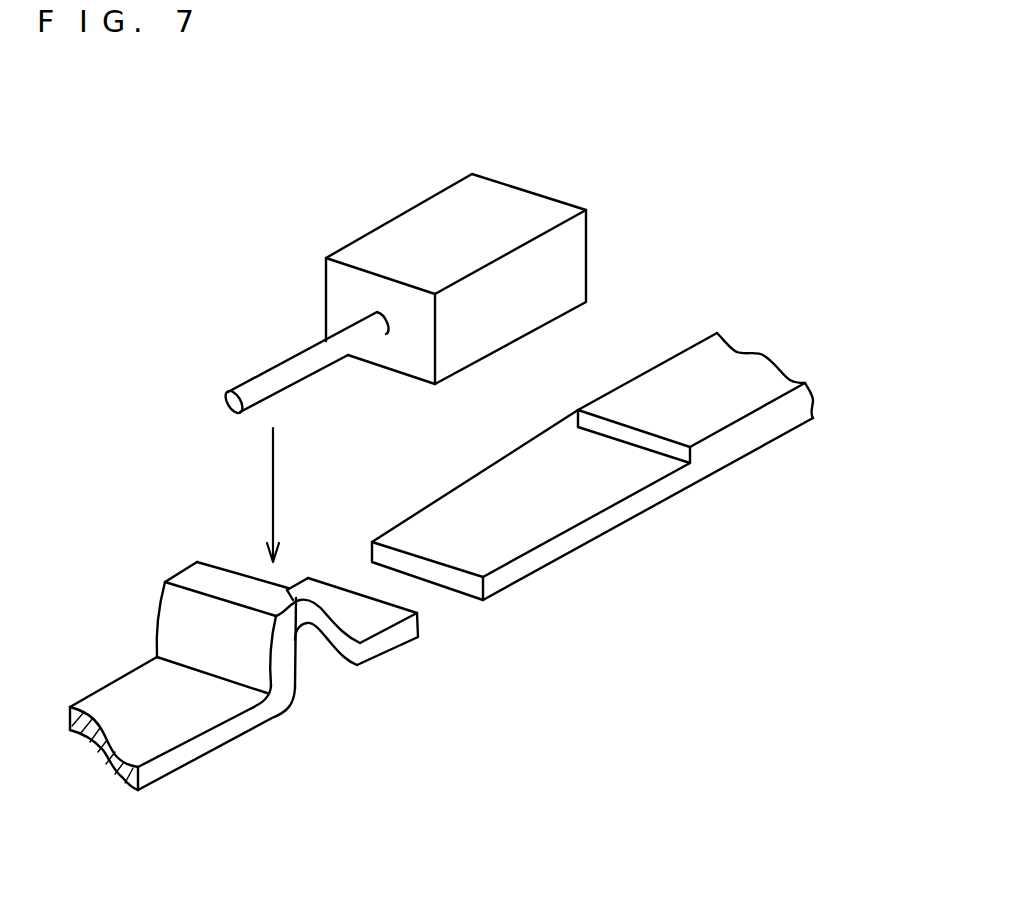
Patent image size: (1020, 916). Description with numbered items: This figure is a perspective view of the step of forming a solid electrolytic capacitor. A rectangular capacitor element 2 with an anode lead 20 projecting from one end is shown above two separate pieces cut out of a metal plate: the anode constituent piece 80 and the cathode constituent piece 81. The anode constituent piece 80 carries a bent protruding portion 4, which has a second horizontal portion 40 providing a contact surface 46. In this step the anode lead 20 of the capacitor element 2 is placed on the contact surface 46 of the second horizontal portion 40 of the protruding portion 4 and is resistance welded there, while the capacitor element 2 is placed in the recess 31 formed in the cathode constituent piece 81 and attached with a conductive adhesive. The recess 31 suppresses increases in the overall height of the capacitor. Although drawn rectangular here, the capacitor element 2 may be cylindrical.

The capacitor element 2 is at (417, 227).
The anode lead 20 is at (280, 372).
The recess 31 is at (555, 519).
The cathode constituent piece 81 is at (729, 403).
The protruding portion 4 is at (244, 661).
The second horizontal portion 40 is at (317, 580).
The contact surface 46 is at (190, 573).
The anode constituent piece 80 is at (185, 717).